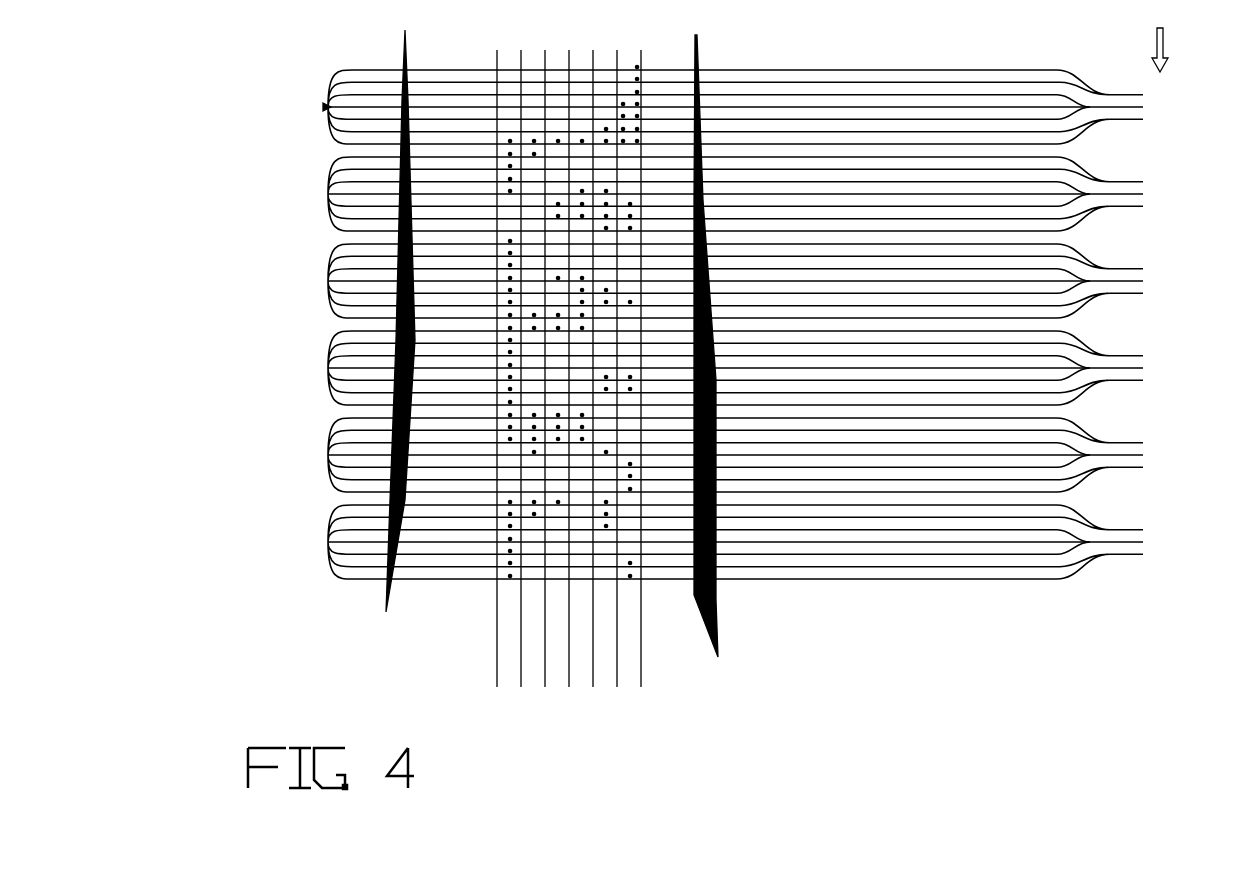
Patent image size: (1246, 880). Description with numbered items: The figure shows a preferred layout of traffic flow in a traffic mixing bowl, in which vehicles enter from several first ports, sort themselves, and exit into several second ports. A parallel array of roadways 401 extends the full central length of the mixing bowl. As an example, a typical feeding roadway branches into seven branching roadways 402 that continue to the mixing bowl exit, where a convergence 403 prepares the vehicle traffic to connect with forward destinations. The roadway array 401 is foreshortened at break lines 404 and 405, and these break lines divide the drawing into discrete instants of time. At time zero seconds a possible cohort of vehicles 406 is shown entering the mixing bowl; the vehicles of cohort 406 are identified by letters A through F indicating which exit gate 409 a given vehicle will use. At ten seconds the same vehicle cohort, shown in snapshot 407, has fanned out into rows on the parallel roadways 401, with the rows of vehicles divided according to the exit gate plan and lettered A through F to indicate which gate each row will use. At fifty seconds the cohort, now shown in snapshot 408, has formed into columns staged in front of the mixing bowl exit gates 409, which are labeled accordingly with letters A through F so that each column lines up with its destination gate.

The parallel array of roadways 401 is at (435, 579).
The branching roadways 402 is at (337, 583).
The convergence 403 is at (1075, 578).
The break line 404 is at (385, 600).
The break line 405 is at (720, 648).
The cohort of vehicles 406 is at (363, 60).
The snapshot 407 is at (655, 62).
The snapshot 408 is at (990, 62).
The exit gates 409 is at (1132, 47).